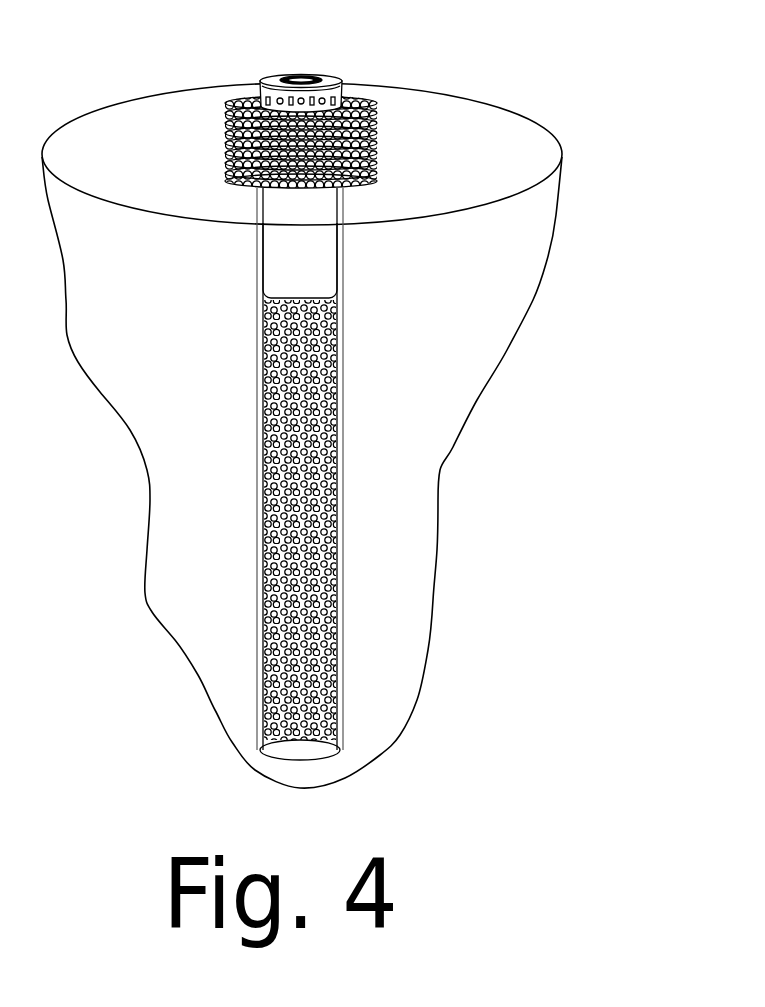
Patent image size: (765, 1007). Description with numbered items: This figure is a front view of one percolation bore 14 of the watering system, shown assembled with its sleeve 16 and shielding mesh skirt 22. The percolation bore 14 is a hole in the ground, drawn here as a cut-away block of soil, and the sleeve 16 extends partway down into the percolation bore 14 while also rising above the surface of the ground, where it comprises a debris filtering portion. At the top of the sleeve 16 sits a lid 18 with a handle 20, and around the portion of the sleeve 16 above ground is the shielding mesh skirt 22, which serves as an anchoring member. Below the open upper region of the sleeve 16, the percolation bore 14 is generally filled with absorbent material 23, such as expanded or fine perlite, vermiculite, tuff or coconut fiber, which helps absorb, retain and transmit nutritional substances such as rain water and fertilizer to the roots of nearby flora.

The percolation bore 14 is at (345, 362).
The sleeve 16 is at (332, 249).
The lid 18 is at (272, 78).
The handle 20 is at (305, 77).
The shielding mesh skirt 22 is at (238, 95).
The absorbent material 23 is at (268, 352).